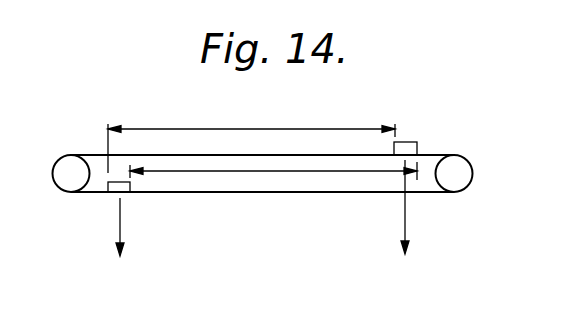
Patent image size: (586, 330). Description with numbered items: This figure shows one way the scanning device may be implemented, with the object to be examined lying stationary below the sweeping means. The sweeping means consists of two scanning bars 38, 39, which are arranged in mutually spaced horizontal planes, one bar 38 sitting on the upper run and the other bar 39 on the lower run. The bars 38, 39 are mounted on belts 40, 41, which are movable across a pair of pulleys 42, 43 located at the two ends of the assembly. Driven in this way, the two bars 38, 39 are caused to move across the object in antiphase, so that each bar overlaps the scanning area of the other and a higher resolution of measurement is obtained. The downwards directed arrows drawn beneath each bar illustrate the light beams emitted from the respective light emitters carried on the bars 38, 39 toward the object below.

The scanning bar 38 is at (409, 142).
The scanning bar 39 is at (128, 193).
The belt 40 is at (275, 193).
The belt 41 is at (262, 173).
The pulley 42 is at (67, 183).
The pulley 43 is at (452, 180).